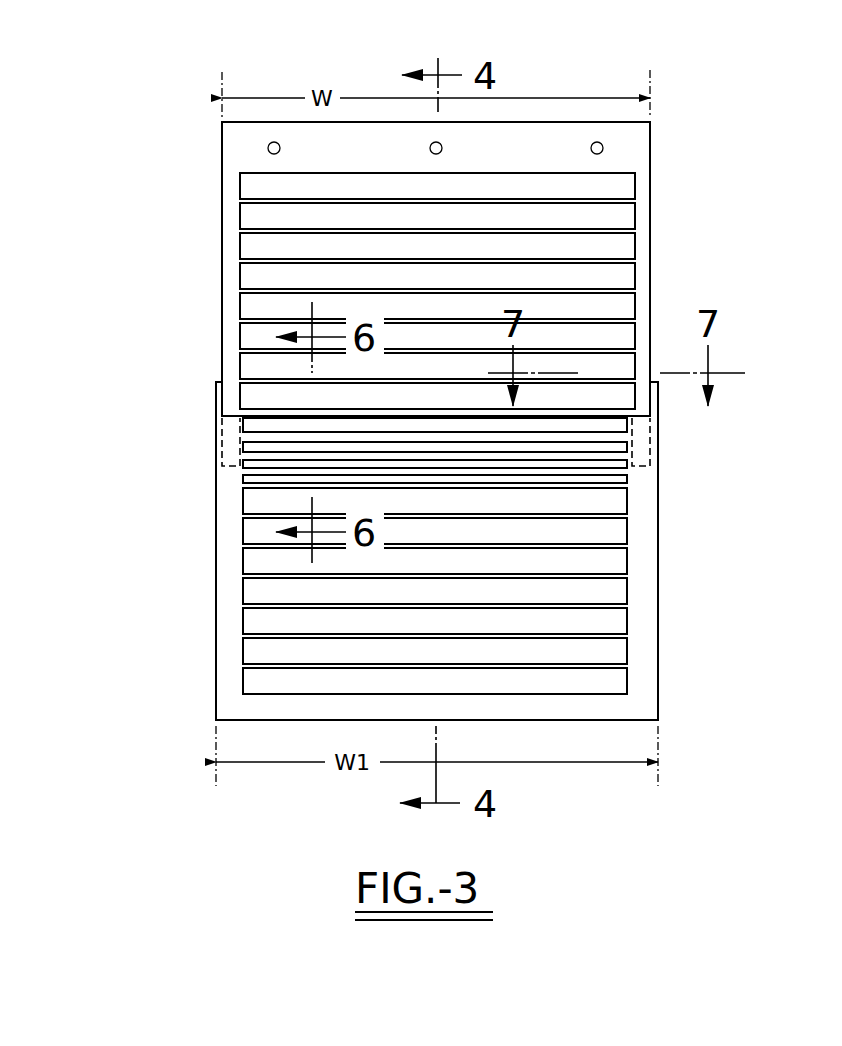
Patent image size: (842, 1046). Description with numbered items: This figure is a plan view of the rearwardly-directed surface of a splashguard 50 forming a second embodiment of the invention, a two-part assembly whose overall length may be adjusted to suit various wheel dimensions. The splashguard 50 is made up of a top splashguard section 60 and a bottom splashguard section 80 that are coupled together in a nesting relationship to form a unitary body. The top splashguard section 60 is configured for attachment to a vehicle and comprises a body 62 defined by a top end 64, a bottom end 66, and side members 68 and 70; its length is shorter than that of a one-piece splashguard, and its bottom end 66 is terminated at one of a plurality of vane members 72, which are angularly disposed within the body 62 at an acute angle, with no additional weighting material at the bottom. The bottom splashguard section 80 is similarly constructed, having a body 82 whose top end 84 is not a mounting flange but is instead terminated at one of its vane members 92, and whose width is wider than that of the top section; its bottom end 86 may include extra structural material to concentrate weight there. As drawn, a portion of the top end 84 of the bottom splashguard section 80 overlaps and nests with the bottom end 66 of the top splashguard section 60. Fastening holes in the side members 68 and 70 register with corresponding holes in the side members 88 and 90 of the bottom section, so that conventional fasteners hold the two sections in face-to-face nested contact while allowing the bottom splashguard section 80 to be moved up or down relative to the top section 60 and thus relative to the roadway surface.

The splashguard 50 is at (462, 408).
The top splashguard section 60 is at (420, 263).
The body 62 is at (184, 269).
The top end 64 is at (232, 150).
The bottom end 66 is at (226, 441).
The side member 68 is at (232, 244).
The side member 70 is at (640, 260).
The vane members 72 is at (620, 248).
The bottom splashguard section 80 is at (426, 556).
The body 82 is at (214, 625).
The top end 84 is at (216, 450).
The bottom end 86 is at (228, 708).
The side member 88 is at (228, 522).
The side member 90 is at (645, 518).
The vane members 92 is at (620, 680).